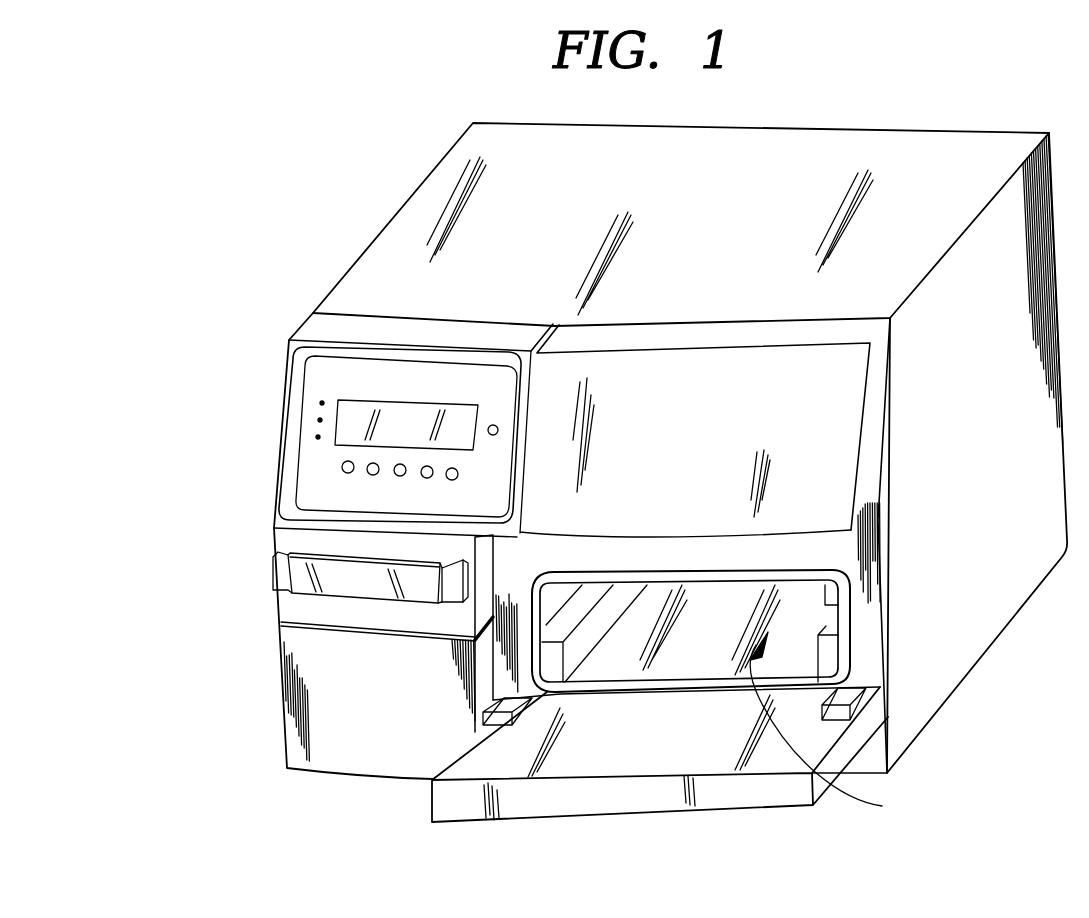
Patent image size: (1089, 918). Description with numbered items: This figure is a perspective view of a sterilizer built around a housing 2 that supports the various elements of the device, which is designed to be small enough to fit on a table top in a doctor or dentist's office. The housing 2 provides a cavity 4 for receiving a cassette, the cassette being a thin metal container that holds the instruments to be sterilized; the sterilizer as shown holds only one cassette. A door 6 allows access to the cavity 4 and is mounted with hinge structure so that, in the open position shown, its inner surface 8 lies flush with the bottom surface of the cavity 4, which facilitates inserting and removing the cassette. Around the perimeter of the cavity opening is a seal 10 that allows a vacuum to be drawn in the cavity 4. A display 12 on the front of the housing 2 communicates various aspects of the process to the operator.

The housing 2 is at (668, 241).
The cavity 4 is at (829, 726).
The door 6 is at (610, 805).
The inner surface 8 is at (648, 749).
The seal 10 is at (838, 583).
The display 12 is at (315, 473).